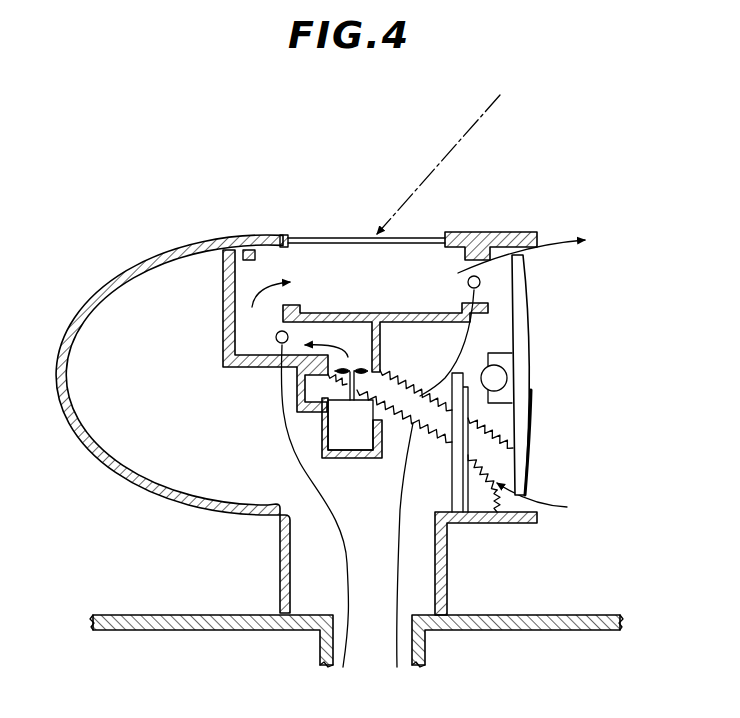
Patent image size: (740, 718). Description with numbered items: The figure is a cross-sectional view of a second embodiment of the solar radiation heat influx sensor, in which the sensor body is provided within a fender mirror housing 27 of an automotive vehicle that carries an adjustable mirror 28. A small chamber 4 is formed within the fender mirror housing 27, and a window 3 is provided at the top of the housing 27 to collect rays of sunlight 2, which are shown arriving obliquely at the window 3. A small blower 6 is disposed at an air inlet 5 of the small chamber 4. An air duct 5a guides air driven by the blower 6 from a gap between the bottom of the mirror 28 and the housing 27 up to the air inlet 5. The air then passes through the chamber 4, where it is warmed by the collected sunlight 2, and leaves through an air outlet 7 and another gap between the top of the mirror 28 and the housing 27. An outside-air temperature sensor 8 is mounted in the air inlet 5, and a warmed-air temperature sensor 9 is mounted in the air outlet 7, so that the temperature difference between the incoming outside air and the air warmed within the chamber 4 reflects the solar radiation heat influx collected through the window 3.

The rays of sunlight 2 is at (489, 108).
The window 3 is at (317, 237).
The small chamber 4 is at (373, 286).
The air inlet 5 is at (362, 347).
The air duct 5a is at (434, 432).
The small blower 6 is at (353, 442).
The air outlet 7 is at (483, 268).
The outside-air temperature sensor 8 is at (275, 343).
The sensor 9 is at (480, 285).
The fender mirror housing 27 is at (192, 245).
The adjustable mirror 28 is at (528, 413).